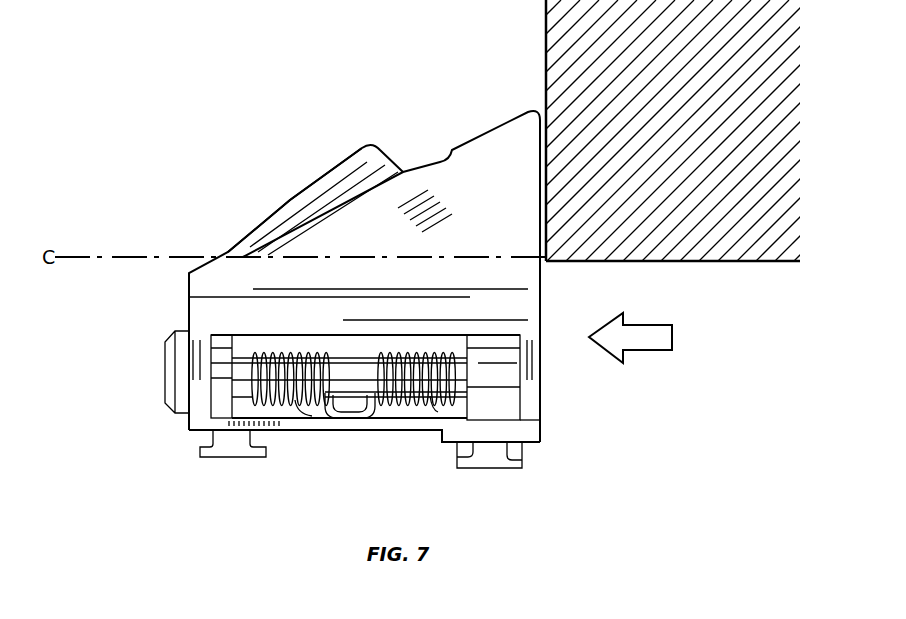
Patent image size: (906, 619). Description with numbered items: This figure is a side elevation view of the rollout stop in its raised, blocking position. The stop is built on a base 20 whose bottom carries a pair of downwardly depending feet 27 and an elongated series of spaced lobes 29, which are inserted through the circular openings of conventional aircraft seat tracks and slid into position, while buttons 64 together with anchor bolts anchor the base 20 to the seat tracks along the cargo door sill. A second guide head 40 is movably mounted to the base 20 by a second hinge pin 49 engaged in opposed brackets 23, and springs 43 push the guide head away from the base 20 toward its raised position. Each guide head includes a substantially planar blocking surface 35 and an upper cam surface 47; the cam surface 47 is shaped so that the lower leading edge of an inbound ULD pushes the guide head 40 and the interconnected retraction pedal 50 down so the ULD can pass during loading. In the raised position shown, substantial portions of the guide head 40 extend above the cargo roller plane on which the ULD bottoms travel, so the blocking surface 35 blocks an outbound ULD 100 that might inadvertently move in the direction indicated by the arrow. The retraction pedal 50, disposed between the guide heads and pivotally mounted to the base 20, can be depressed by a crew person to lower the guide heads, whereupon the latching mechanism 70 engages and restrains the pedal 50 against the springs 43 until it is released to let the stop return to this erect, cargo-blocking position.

The ULD 100 is at (544, 62).
The second guide head 40 is at (477, 135).
The upper cam surface 47 is at (343, 200).
The retraction pedal 50 is at (290, 195).
The latching mechanism 70 is at (163, 372).
The brackets 23 is at (225, 378).
The blocking surface 35 is at (542, 385).
The base 20 is at (542, 430).
The springs 43 is at (312, 402).
The second hinge pin 49 is at (350, 382).
The feet 27 is at (227, 458).
The spaced lobes 29 is at (482, 470).
The buttons 64 is at (525, 452).